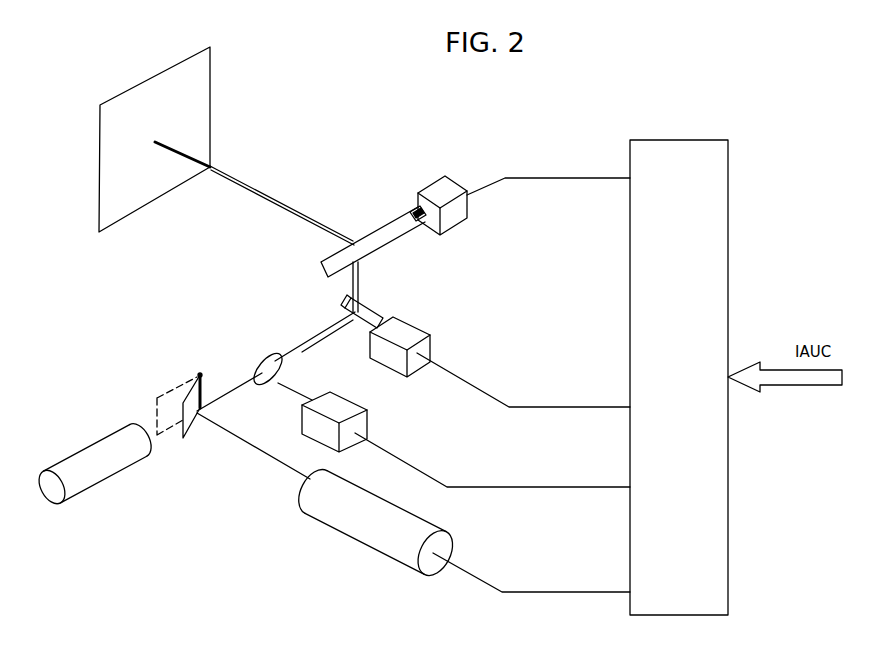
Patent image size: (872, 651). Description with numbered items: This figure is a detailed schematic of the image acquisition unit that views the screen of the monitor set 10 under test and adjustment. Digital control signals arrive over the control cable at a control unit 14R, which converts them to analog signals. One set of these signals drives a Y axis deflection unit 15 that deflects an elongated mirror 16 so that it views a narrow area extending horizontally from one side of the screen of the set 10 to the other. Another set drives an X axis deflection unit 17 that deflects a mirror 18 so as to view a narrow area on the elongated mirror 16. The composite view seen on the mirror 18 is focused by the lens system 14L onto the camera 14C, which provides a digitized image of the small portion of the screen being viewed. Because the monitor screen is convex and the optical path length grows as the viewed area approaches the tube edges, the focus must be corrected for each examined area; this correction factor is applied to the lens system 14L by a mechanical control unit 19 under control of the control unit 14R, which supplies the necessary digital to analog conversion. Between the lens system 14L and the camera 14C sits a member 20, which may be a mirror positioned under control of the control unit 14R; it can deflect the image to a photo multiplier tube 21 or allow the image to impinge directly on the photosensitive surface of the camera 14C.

The set under test 10 is at (210, 68).
The Y axis deflection unit 15 is at (440, 182).
The elongated mirror 16 is at (388, 222).
The X axis deflection unit 17 is at (417, 327).
The mirror 18 is at (365, 307).
The mechanical control unit 19 is at (352, 407).
The member 20 is at (190, 432).
The photo multiplier tube 21 is at (332, 522).
The camera 14C is at (73, 457).
The lens system 14L is at (273, 353).
The control unit 14R is at (729, 232).